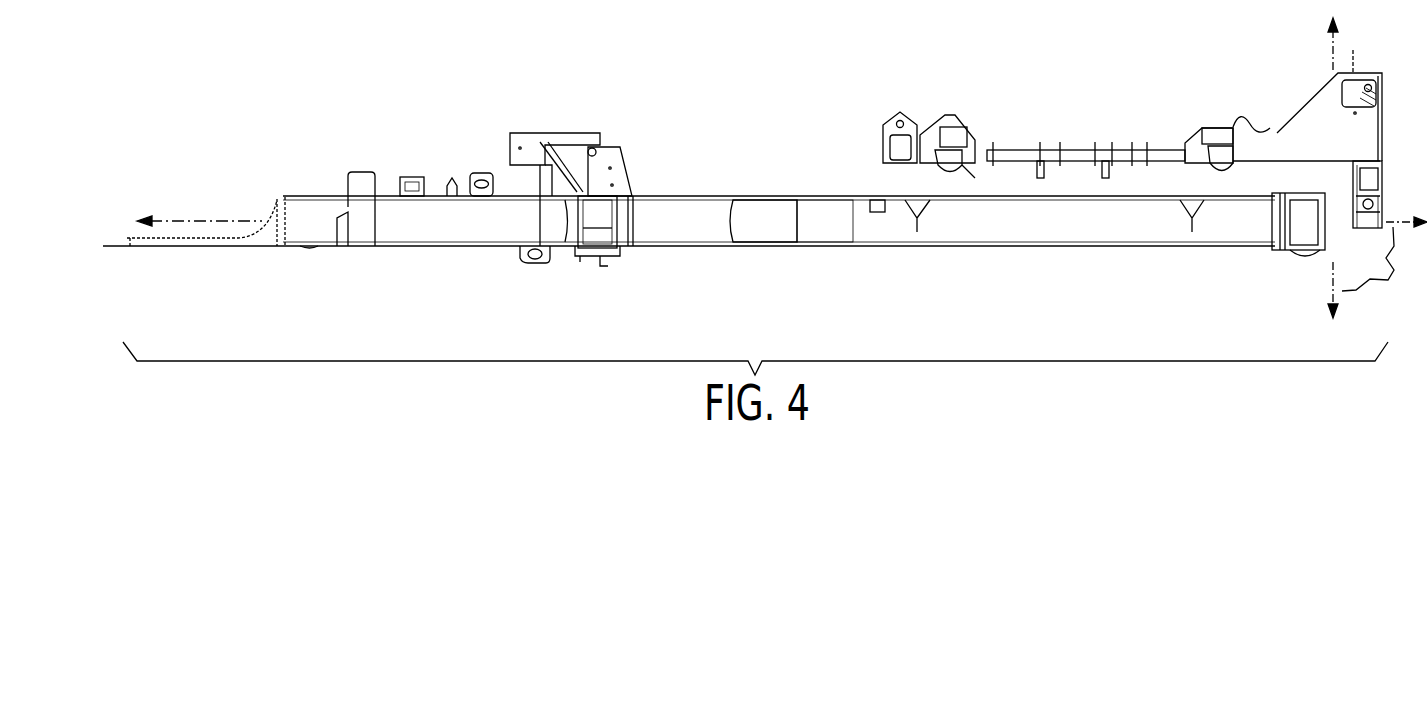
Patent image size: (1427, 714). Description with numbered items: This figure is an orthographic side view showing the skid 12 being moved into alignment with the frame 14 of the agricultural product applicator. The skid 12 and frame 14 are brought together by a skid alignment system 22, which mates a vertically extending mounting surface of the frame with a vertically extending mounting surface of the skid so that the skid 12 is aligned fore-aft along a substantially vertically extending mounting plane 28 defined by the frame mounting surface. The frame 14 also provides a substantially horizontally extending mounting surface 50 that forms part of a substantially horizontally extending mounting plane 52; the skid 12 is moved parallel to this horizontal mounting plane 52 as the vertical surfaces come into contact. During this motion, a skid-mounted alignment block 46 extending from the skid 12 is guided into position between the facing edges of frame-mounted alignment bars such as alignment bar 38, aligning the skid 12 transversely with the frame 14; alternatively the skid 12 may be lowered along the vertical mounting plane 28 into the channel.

The skid 12 is at (1316, 115).
The frame 14 is at (710, 235).
The skid alignment system 22 is at (1379, 269).
The vertically extending mounting plane 28 is at (1330, 288).
The frame-mounted alignment bar 38 is at (1328, 212).
The left skid-mounted alignment block 46 is at (1350, 190).
The horizontally extending mounting surface 50 is at (830, 196).
The horizontally extending mounting plane 52 is at (1393, 221).